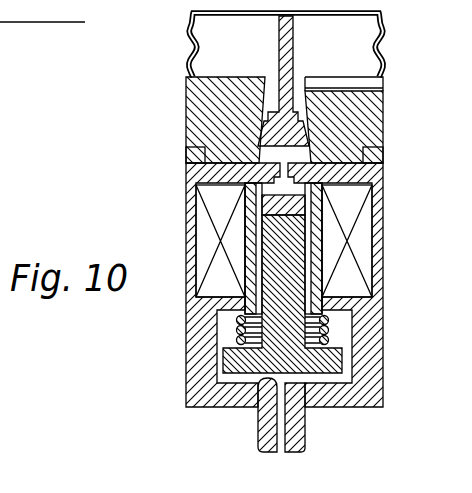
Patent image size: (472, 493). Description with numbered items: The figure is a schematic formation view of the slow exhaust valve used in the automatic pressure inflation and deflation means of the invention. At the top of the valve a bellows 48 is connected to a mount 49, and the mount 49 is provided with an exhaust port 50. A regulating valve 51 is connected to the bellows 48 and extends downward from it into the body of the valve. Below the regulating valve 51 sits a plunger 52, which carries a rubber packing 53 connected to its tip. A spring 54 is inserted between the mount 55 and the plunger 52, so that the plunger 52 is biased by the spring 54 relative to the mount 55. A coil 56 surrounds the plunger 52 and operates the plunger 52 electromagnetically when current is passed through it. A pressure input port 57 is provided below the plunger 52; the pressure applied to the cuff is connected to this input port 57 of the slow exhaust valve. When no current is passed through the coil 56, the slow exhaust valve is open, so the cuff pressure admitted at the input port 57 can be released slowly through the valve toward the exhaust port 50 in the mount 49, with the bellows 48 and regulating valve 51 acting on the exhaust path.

The bellows 48 is at (191, 50).
The mount 49 is at (191, 118).
The exhaust port 50 is at (385, 90).
The regulating valve 51 is at (283, 136).
The plunger 52 is at (310, 353).
The rubber packing 53 is at (272, 208).
The spring 54 is at (235, 330).
The mount 55 is at (223, 302).
The coil 56 is at (205, 235).
The pressure input port 57 is at (282, 453).